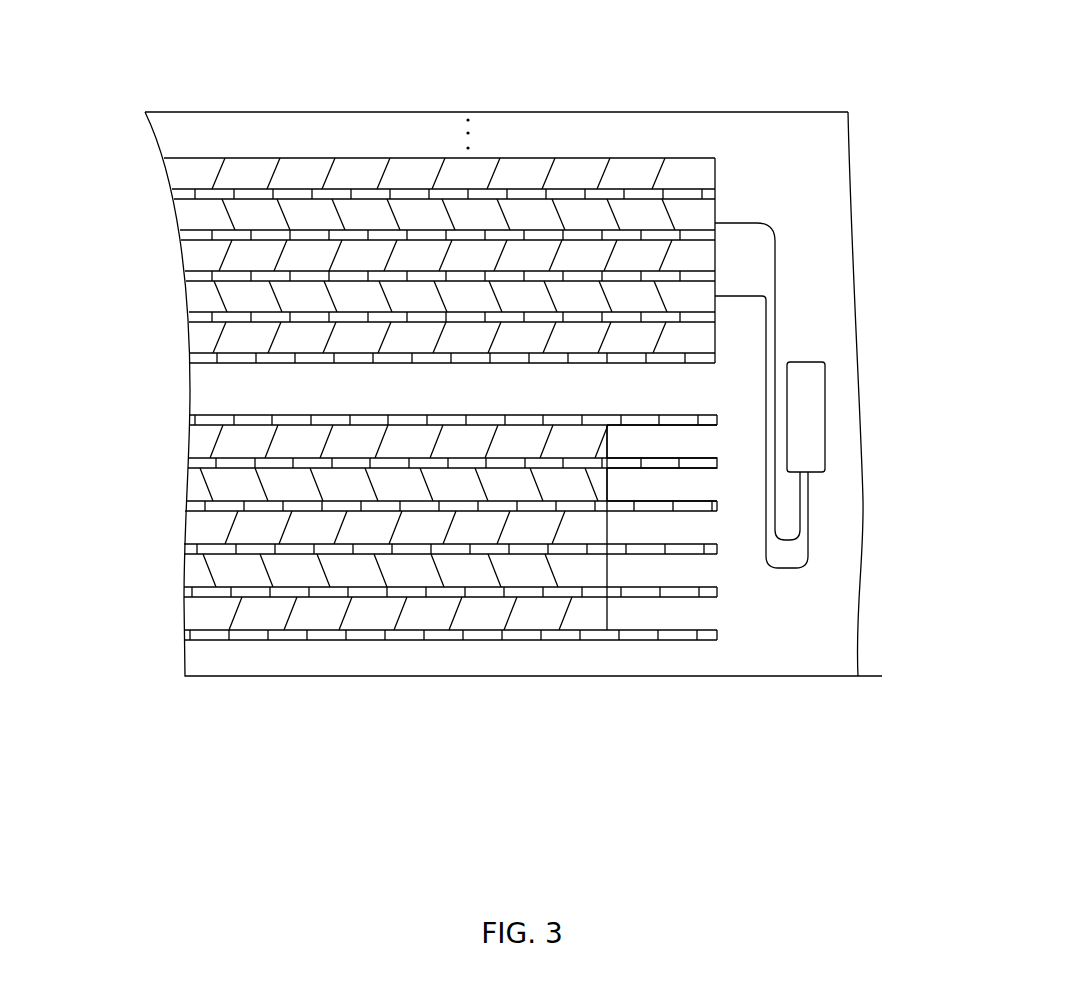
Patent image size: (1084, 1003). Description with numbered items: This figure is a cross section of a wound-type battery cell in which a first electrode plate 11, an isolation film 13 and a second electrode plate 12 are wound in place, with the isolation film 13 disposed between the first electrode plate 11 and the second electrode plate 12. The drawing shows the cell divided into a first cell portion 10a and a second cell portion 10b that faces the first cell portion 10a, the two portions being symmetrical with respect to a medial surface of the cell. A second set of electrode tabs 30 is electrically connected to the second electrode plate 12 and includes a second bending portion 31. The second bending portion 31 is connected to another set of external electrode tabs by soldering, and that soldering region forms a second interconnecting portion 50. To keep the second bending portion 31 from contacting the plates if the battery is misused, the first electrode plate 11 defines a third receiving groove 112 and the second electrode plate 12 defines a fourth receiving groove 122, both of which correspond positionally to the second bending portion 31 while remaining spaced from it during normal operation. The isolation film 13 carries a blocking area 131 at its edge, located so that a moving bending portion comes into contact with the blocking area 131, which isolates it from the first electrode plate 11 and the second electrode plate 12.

The first cell portion 10a is at (391, 187).
The second cell portion 10b is at (434, 627).
The first electrode plate 11 is at (527, 337).
The second electrode plate 12 is at (470, 297).
The isolation film 13 is at (355, 320).
The second set of electrode tabs 30 is at (738, 213).
The second bending portion 31 is at (778, 568).
The second interconnecting portion 50 is at (807, 418).
The third receiving groove 112 is at (696, 446).
The fourth receiving groove 122 is at (630, 490).
The blocking area 131 is at (670, 467).